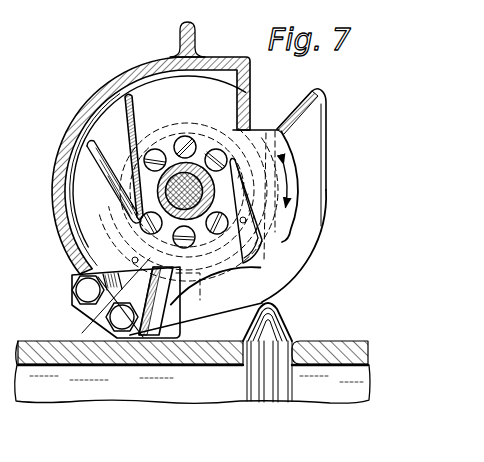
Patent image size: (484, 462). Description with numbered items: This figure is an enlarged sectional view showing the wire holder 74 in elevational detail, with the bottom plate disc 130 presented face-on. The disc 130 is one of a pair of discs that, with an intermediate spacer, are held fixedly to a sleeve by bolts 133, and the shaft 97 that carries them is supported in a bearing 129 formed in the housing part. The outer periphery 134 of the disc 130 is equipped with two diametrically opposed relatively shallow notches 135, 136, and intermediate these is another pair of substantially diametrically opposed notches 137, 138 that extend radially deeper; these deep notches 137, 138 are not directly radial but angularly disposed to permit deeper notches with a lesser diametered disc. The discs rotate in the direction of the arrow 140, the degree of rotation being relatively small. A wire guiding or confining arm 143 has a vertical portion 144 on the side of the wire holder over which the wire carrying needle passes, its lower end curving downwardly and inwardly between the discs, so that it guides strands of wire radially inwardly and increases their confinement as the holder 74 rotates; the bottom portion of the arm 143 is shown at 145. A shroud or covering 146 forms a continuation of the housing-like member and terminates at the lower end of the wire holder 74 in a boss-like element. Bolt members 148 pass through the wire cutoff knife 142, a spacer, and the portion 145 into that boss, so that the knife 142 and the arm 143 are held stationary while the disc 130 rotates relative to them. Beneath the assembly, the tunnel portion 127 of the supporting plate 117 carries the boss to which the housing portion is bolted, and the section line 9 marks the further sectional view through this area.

The shroud 146 is at (95, 97).
The disc member 130 is at (143, 92).
The shallow notch 135 is at (251, 126).
The wire guiding arm 143 is at (380, 83).
The vertical portion 144 is at (381, 133).
The outer periphery 134 is at (298, 173).
The arrow 140 is at (292, 186).
The shaft 97 is at (203, 162).
The bearing 129 is at (178, 162).
The bolt 133 is at (192, 138).
The deep notch 138 is at (127, 170).
The wire holder 74 is at (87, 181).
The deep notch 137 is at (295, 263).
The bottom portion 145 is at (240, 295).
The wire cutoff knife 142 is at (162, 291).
The shallow notch 136 is at (130, 262).
The bolt member 148 is at (74, 292).
The section line 9 is at (82, 328).
The supporting plate 117 is at (46, 367).
The tunnel portion 127 is at (292, 321).